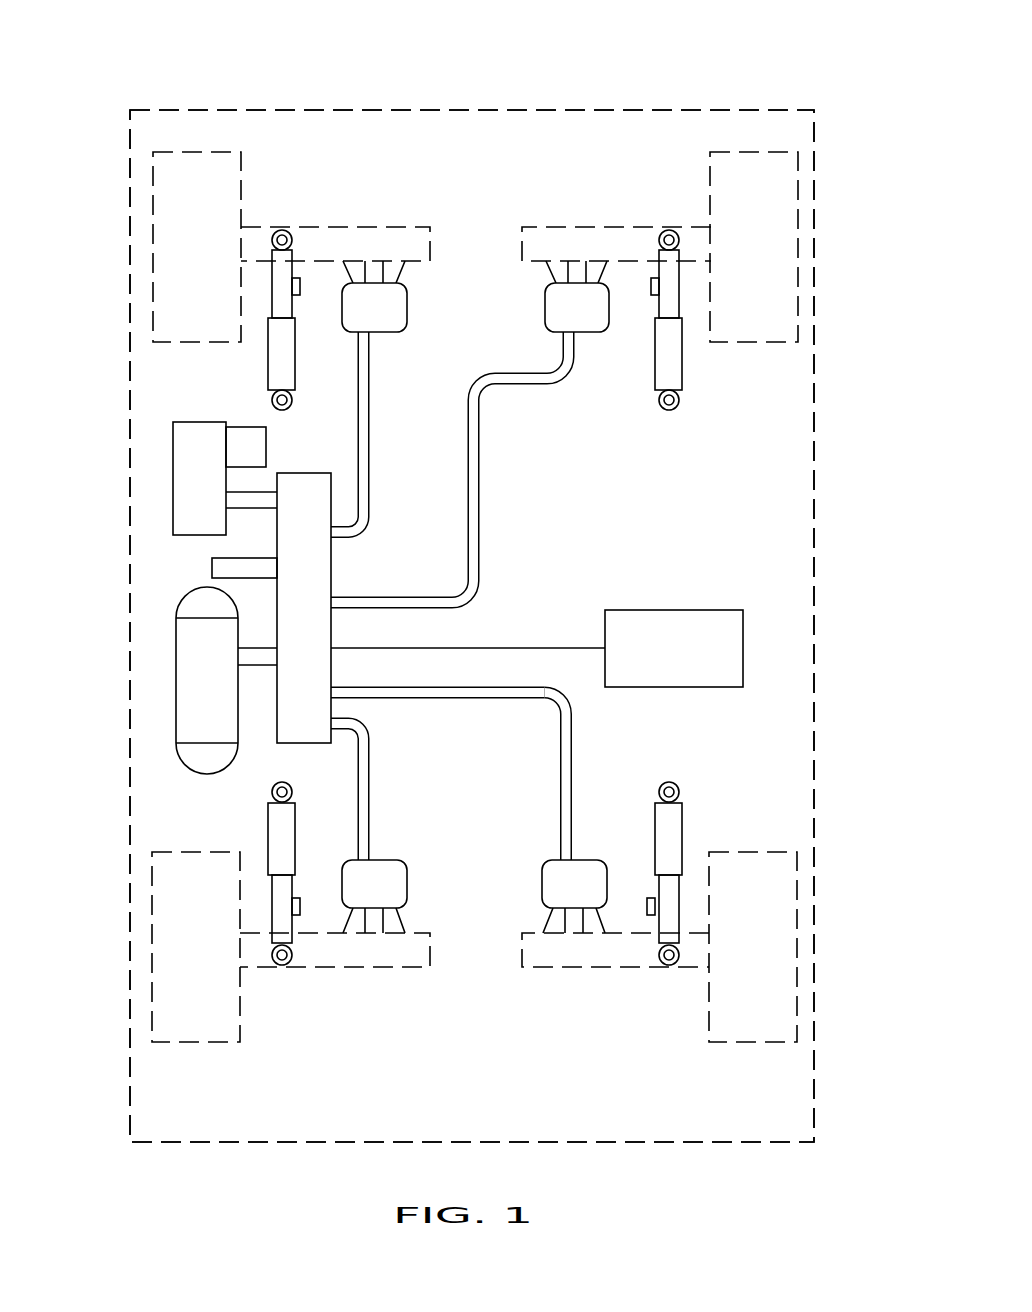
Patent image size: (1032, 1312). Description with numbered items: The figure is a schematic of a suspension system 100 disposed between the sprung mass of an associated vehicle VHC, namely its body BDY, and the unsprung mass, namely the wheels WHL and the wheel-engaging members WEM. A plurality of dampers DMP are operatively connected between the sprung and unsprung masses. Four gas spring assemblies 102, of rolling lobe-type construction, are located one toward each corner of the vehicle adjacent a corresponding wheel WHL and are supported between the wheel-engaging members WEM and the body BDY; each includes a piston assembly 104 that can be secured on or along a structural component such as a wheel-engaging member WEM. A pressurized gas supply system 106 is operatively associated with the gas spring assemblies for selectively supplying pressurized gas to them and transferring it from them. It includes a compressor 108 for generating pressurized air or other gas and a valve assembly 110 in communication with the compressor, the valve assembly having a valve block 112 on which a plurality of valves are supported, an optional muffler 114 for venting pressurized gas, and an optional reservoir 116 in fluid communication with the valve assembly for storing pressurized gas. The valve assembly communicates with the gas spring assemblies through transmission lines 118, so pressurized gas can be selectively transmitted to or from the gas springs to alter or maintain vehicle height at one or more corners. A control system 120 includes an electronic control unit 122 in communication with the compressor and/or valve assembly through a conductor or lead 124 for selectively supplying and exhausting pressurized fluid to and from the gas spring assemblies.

The suspension system 100 is at (485, 142).
The gas spring assemblies 102 is at (388, 345).
The piston assemblies 104 is at (414, 277).
The pressurized gas supply system 106 is at (158, 589).
The compressor 108 is at (179, 476).
The valve assembly 110 is at (338, 570).
The valve block 112 is at (337, 687).
The muffler 114 is at (213, 566).
The reservoir 116 is at (178, 700).
The transmission lines 118 is at (370, 490).
The control system 120 is at (683, 606).
The electronic control unit 122 is at (674, 648).
The conductor or lead 124 is at (473, 645).
The vehicle VHC is at (769, 100).
The vehicle body BDY is at (618, 108).
The wheel WHL is at (165, 180).
The wheel-engaging member WEM is at (393, 227).
The dampers DMP is at (278, 357).